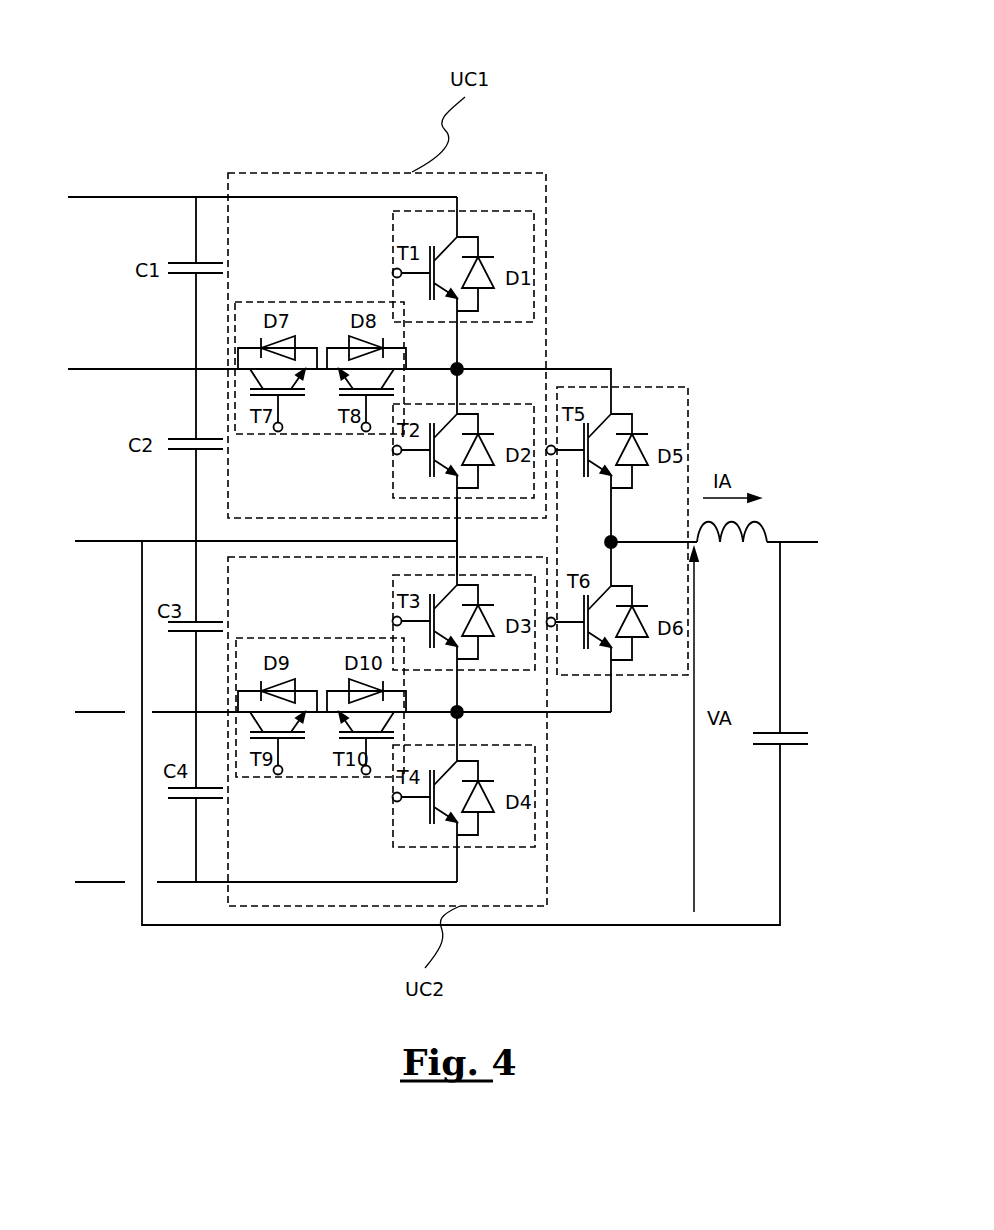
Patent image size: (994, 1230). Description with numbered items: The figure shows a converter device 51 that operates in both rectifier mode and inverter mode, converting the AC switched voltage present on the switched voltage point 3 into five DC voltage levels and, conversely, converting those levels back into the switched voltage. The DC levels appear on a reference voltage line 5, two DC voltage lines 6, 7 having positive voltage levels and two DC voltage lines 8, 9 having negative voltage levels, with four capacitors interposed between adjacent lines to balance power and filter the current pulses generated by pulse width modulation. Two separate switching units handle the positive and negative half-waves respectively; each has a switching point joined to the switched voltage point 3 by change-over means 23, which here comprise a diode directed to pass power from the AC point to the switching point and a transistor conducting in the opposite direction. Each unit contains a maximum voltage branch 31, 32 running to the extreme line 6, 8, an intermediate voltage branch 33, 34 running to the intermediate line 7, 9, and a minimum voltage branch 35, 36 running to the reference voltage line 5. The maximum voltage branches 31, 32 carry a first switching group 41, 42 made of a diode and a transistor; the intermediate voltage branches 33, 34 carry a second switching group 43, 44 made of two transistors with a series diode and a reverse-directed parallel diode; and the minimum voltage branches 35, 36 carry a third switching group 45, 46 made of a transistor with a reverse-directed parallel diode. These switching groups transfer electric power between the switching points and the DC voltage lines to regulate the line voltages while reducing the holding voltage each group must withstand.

The switched voltage point 3 is at (615, 545).
The reference voltage line 5 is at (92, 541).
The DC voltage line having a positive voltage level 6 is at (116, 197).
The DC voltage line having a positive voltage level 7 is at (116, 369).
The DC voltage line having a negative voltage level 8 is at (98, 883).
The DC voltage line having a negative voltage level 9 is at (100, 712).
The change-over means 23 is at (688, 395).
The maximum voltage branch 31 is at (342, 197).
The maximum voltage branch 32 is at (345, 906).
The intermediate voltage branch 33 is at (220, 369).
The intermediate voltage branch 34 is at (236, 712).
The minimum voltage branch 35 is at (457, 508).
The minimum voltage branch 36 is at (457, 547).
The first switching group 41 is at (492, 211).
The first switching group 42 is at (490, 848).
The second switching group 43 is at (278, 301).
The second switching group 44 is at (305, 777).
The third switching group 45 is at (495, 404).
The third switching group 46 is at (515, 672).
The converter device 51 is at (722, 112).